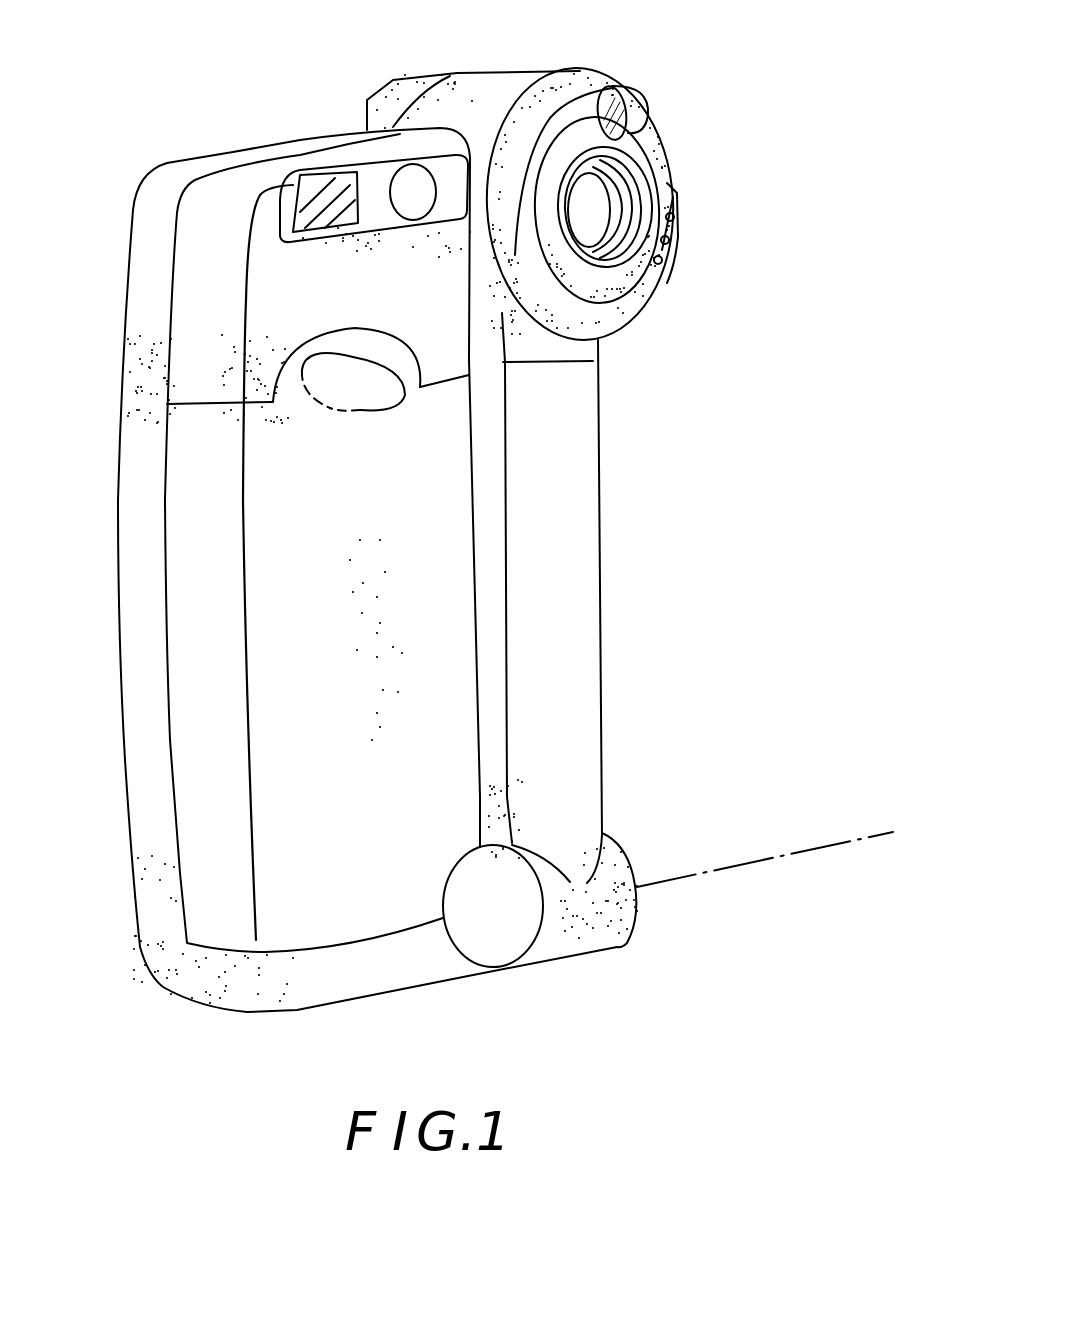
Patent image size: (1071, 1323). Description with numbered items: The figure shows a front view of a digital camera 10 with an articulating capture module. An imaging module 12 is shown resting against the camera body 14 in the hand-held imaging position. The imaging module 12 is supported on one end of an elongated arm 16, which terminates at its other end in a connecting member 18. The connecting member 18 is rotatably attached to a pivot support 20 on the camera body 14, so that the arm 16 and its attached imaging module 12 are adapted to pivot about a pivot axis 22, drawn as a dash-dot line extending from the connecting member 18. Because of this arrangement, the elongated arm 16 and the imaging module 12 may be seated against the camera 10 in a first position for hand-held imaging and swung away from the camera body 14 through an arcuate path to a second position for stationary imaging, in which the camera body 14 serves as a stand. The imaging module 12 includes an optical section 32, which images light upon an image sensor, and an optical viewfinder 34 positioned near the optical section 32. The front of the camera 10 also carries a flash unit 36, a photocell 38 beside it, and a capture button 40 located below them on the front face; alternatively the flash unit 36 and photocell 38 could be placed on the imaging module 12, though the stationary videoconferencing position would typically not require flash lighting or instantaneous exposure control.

The digital camera 10 is at (106, 190).
The imaging module 12 is at (483, 93).
The camera body 14 is at (127, 310).
The elongated arm 16 is at (566, 530).
The connecting member 18 is at (617, 865).
The pivot support 20 is at (488, 927).
The pivot axis 22 is at (785, 845).
The optical section 32 is at (600, 202).
The optical viewfinder 34 is at (620, 97).
The flash unit 36 is at (310, 193).
The photocell 38 is at (405, 178).
The capture button 40 is at (302, 373).